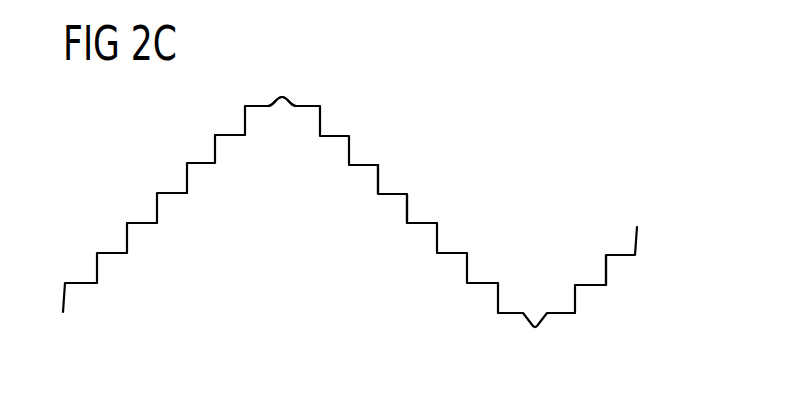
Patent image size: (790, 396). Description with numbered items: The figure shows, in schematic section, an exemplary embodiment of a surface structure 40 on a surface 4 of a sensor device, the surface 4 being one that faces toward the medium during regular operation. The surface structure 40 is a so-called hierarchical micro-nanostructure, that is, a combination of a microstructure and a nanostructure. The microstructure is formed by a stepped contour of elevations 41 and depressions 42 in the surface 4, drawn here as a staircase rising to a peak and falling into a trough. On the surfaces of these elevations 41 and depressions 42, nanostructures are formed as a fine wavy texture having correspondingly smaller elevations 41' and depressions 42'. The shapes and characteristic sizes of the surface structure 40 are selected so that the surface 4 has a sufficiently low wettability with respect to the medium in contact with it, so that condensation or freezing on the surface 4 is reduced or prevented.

The surface 4 is at (180, 165).
The surface structure 40 is at (540, 190).
The elevation 41 is at (295, 81).
The elevation of the nanostructure 41' is at (381, 151).
The depression of the nanostructure 42' is at (437, 194).
The depression 42 is at (628, 280).